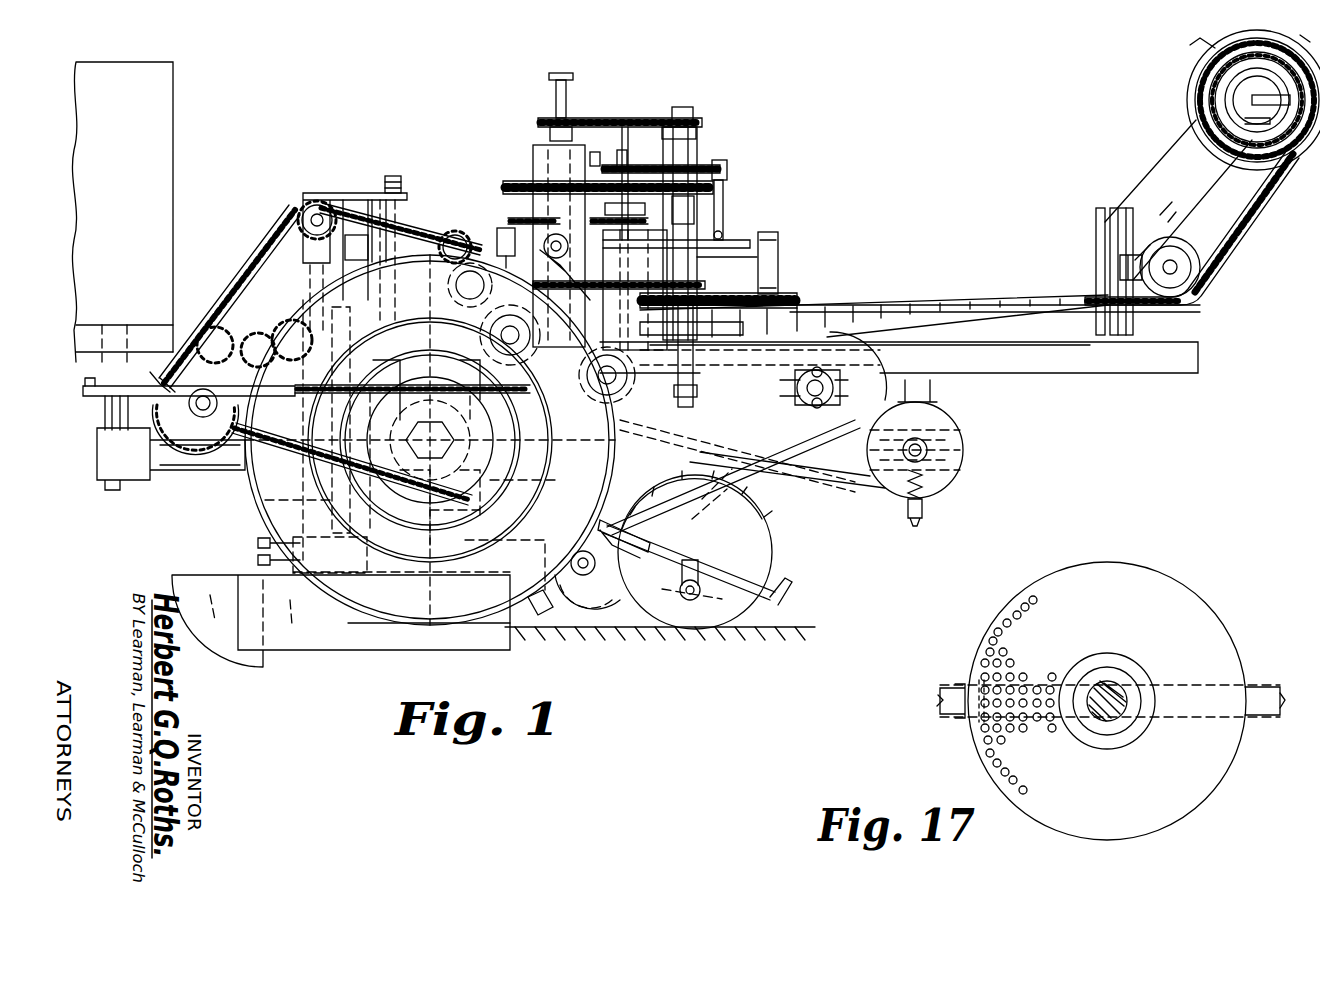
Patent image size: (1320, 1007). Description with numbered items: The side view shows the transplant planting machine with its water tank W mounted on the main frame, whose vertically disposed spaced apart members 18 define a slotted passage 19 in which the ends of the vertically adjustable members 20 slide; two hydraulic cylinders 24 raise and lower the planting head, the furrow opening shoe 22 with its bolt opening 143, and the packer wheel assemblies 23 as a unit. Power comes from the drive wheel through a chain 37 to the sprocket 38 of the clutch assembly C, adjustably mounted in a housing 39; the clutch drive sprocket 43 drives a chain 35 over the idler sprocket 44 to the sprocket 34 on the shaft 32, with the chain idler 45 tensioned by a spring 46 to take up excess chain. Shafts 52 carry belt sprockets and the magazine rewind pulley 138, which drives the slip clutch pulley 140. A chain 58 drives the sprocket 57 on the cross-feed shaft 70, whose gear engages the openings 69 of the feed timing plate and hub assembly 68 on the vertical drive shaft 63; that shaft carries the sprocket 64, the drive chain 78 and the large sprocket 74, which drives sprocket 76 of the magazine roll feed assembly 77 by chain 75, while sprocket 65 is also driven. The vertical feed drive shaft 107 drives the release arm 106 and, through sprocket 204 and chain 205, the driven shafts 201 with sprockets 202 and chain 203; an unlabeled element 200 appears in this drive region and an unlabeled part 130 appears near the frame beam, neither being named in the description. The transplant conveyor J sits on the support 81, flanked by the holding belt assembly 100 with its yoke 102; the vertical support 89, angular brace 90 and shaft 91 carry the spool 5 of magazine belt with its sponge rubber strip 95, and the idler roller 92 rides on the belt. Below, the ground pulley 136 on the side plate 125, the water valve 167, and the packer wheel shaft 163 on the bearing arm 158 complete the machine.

In FIG. 1, the water tank W is at (123, 136).
In FIG. 1, the spool 5 is at (1190, 85).
In FIG. 1, the horizontally disposed shaft 91 is at (1262, 96).
In FIG. 1, the angularly disposed brace 90 is at (1148, 195).
In FIG. 1, the vertically disposed support 89 is at (1095, 243).
In FIG. 1, the idler roller 92 is at (1182, 248).
In FIG. 1, the strip of sponge rubber 95 is at (1232, 250).
In FIG. 1, the support 81 is at (1140, 374).
In FIG. 1, the transplant conveyor J is at (932, 302).
In FIG. 1, the holding belt assembly 100 is at (805, 303).
In FIG. 1, the yoke 102 is at (792, 266).
In FIG. 1, the release arm 106 is at (715, 335).
In FIG. 1, the bearing 130 is at (800, 408).
In FIG. 1, the planting head side plate 125 is at (735, 470).
In FIG. 1, the slip clutch pulley 140 is at (965, 470).
In FIG. 1, the magazine rewind pulley 138 is at (868, 480).
In FIG. 1, the bearing arm 158 is at (735, 605).
In FIG. 1, the packer wheel shaft 163 is at (696, 600).
In FIG. 1, the packer wheel assemblies 23 is at (672, 627).
In FIG. 1, the ground pulley 136 is at (590, 575).
In FIG. 1, the water valve 167 is at (535, 615).
In FIG. 1, the furrow opening shoe 22 is at (330, 640).
In FIG. 1, the bolt opening 143 is at (258, 547).
In FIG. 1, the chain 37 is at (292, 445).
In FIG. 1, the sprocket 38 is at (202, 440).
In FIG. 1, the clutch assembly C is at (110, 440).
In FIG. 1, the housing 39 is at (128, 412).
In FIG. 1, the drive sprocket 43 is at (199, 330).
In FIG. 1, the chain 35 is at (246, 276).
In FIG. 1, the spring 46 is at (258, 350).
In FIG. 1, the chain idler 45 is at (286, 332).
In FIG. 1, the vertically adjustable members 20 is at (345, 250).
In FIG. 1, the idler sprocket 44 is at (303, 214).
In FIG. 1, the vertically disposed spaced apart members 18 is at (345, 194).
In FIG. 1, the slotted passage 19 is at (370, 198).
In FIG. 1, the hydraulic cylinders 24 is at (404, 182).
In FIG. 1, the shaft 32 is at (452, 232).
In FIG. 1, the sprocket 34 is at (445, 236).
In FIG. 1, the sprocket 57 is at (500, 233).
In FIG. 1, the feed timing plate and hub assembly 68 is at (530, 225).
In FIG. 17, the feed timing plate and hub assembly 68 is at (1165, 582).
In FIG. 1, the cross-feed shaft 70 is at (563, 267).
In FIG. 17, the cross-feed shaft 70 is at (940, 708).
In FIG. 1, the chain 58 is at (665, 296).
In FIG. 1, the large sprocket 74 is at (530, 185).
In FIG. 1, the vertical drive shaft 63 is at (556, 100).
In FIG. 17, the vertical drive shaft 63 is at (1114, 692).
In FIG. 1, the sprocket 64 is at (538, 122).
In FIG. 1, the driven shafts 201 is at (622, 150).
In FIG. 1, the sprockets 202 is at (596, 160).
In FIG. 1, the drive chain 78 is at (628, 120).
In FIG. 1, the chain 75 is at (626, 180).
In FIG. 1, the magazine roll feed assembly 77 is at (683, 107).
In FIG. 1, the sprocket 65 is at (700, 122).
In FIG. 1, the sprocket 204 is at (710, 167).
In FIG. 1, the chain 205 is at (726, 178).
In FIG. 1, the sprocket 76 is at (722, 192).
In FIG. 1, the chain 203 is at (700, 208).
In FIG. 1, the housing 200 is at (635, 254).
In FIG. 1, the vertical feed drive shaft 107 is at (695, 270).
In FIG. 1, the shafts 52 is at (625, 382).
In FIG. 17, the openings 69 is at (985, 672).